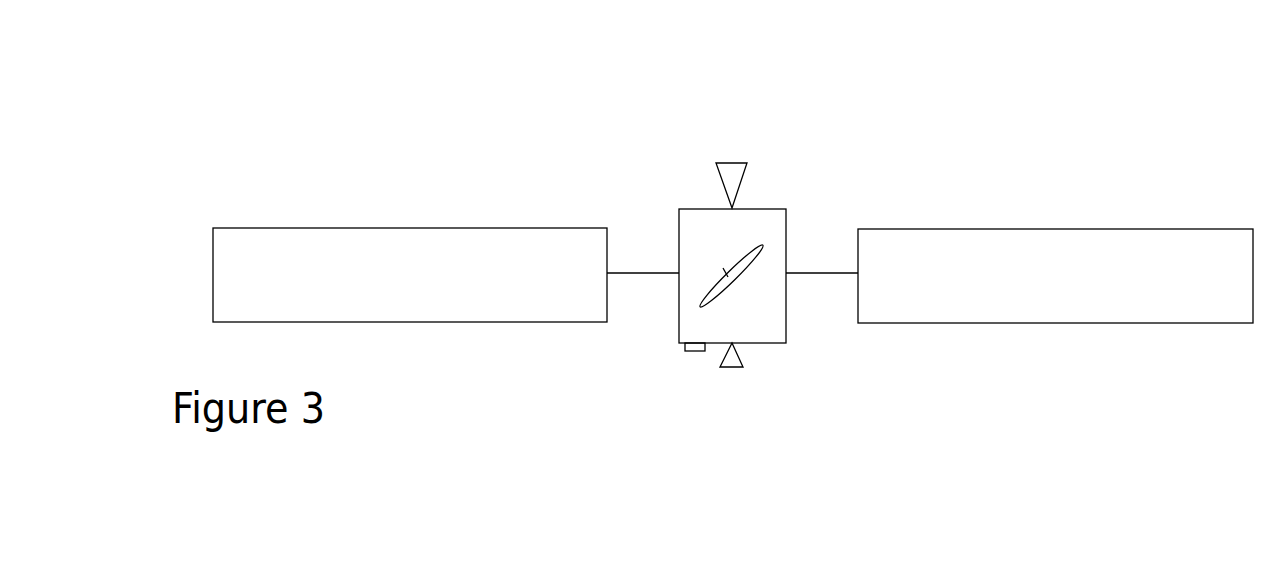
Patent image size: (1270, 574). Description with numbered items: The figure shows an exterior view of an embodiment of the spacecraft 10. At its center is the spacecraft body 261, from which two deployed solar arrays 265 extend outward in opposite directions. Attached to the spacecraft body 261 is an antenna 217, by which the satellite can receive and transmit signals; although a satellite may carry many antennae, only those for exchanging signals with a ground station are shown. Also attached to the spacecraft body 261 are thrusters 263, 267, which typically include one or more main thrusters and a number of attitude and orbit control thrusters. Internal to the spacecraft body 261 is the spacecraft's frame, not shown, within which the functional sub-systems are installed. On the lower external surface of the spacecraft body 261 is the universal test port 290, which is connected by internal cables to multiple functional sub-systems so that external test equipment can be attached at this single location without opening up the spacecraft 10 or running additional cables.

The spacecraft 10 is at (332, 111).
The antenna 217 is at (740, 259).
The spacecraft body 261 is at (775, 338).
The thruster 263 is at (745, 165).
The solar arrays 265 is at (597, 316).
The thruster 267 is at (725, 372).
The universal test port 290 is at (690, 356).